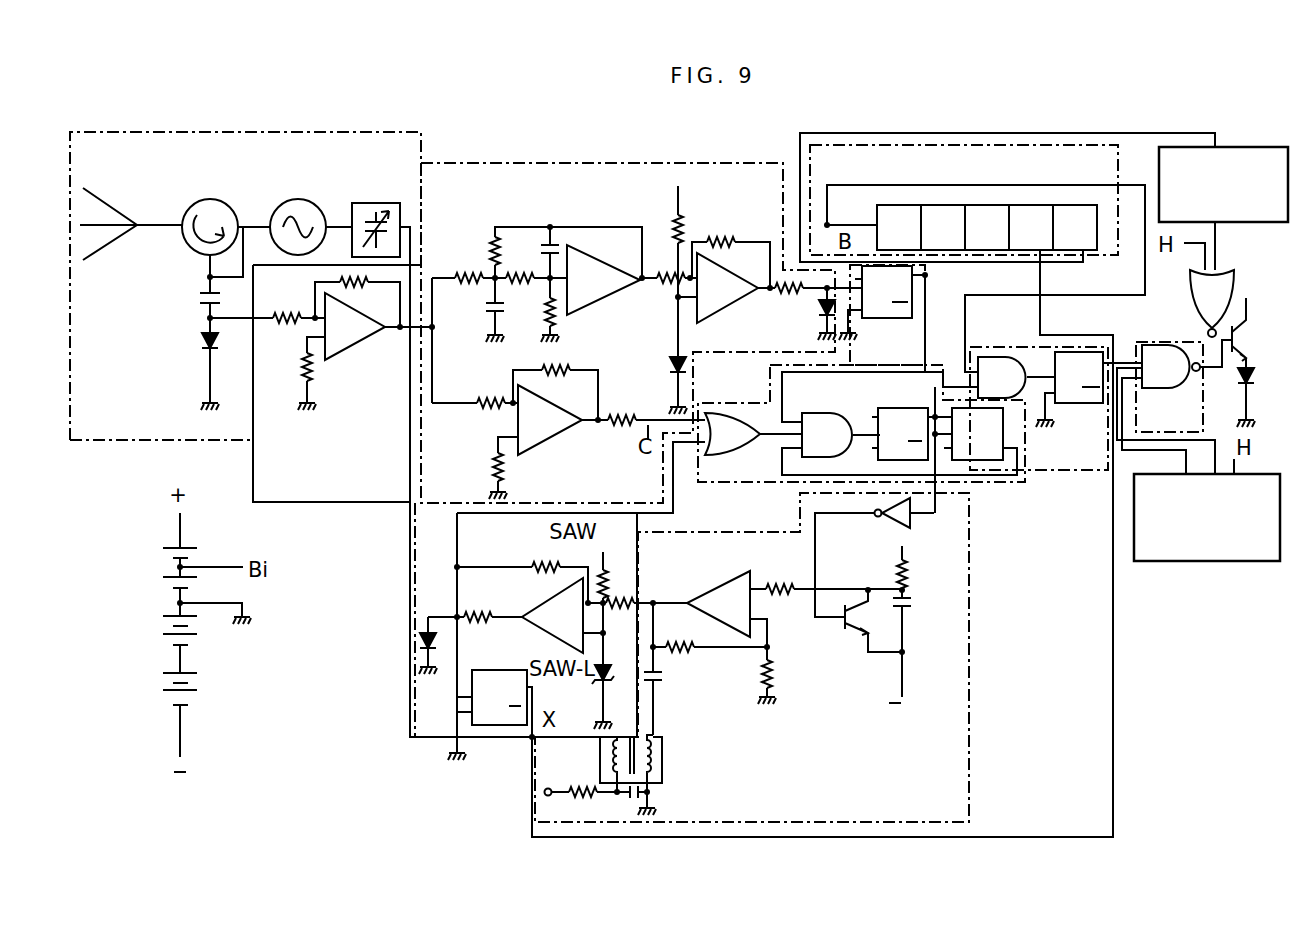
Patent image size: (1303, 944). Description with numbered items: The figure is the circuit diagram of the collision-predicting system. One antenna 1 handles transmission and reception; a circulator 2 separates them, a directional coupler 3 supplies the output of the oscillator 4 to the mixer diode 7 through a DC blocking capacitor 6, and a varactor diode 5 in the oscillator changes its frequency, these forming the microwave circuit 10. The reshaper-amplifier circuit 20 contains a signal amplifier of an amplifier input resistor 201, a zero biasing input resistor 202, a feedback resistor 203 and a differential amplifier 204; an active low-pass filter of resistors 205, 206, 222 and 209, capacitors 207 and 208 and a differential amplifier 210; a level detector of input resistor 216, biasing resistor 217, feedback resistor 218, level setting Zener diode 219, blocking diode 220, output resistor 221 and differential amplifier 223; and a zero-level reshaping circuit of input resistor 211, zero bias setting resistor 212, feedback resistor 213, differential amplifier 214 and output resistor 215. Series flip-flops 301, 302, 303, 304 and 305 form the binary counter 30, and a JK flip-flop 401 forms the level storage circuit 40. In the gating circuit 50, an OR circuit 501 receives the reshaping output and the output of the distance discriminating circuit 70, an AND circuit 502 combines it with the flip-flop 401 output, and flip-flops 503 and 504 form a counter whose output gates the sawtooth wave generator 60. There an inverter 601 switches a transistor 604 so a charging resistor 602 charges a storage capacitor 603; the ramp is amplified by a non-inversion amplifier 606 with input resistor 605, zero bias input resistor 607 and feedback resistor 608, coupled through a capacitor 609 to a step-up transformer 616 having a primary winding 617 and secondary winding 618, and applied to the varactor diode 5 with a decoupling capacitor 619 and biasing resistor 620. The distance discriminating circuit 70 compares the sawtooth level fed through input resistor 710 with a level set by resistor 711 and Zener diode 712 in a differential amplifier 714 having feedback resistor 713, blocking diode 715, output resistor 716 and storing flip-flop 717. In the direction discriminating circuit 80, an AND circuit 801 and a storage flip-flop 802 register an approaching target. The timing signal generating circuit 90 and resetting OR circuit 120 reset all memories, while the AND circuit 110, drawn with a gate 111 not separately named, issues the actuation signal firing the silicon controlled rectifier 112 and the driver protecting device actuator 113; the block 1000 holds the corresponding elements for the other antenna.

The antenna 1 is at (106, 198).
The circulator 2 is at (204, 201).
The directional coupler 3 is at (250, 225).
The oscillator 4 is at (311, 200).
The varactor diode 5 is at (385, 203).
The DC blocking capacitor 6 is at (196, 297).
The mixer diode 7 is at (196, 343).
The microwave circuit 10 is at (263, 132).
The reshaper-amplifier circuit 20 is at (610, 163).
The counter 30 is at (863, 144).
The level storage circuit 40 is at (913, 317).
The gating circuit 50 is at (1017, 498).
The sawtooth wave generator 60 is at (969, 619).
The distance discriminating circuit 70 is at (415, 694).
The direction discriminating circuit 80 is at (1027, 348).
The timing signal generating circuit 90 is at (1262, 224).
The AND circuit 110 is at (1168, 342).
The AND gate 111 is at (1163, 390).
The silicon controlled rectifier 112 is at (1250, 386).
The driver protecting device actuator 113 is at (1248, 322).
The OR circuit 120 is at (1192, 303).
The amplifier input resistor 201 is at (285, 324).
The zero biasing input resistor 202 is at (304, 380).
The feedback resistor 203 is at (340, 280).
The differential amplifier 204 is at (362, 350).
The resistor 205 is at (480, 274).
The resistor 206 is at (494, 244).
The capacitor 207 is at (543, 247).
The capacitor 208 is at (492, 314).
The resistor 209 is at (556, 320).
The differential amplifier 210 is at (610, 288).
The input resistor 211 is at (490, 400).
The zero bias setting resistor 212 is at (495, 465).
The feedback resistor 213 is at (564, 375).
The differential amplifier 214 is at (554, 440).
The output resistor 215 is at (620, 425).
The input resistor 216 is at (662, 288).
The biasing resistor 217 is at (674, 226).
The feedback resistor 218 is at (722, 240).
The level setting Zener diode 219 is at (669, 366).
The diode 220 is at (822, 320).
The output resistor 221 is at (790, 296).
The resistor 222 is at (520, 285).
The differential amplifier 223 is at (727, 314).
The flip-flop 301 is at (894, 205).
The flip-flop 302 is at (943, 205).
The flip-flop 303 is at (993, 205).
The flip-flop 304 is at (1038, 205).
The flip-flop 305 is at (1086, 205).
The JK flip-flop 401 is at (870, 326).
The OR circuit 501 is at (748, 455).
The AND circuit 502 is at (824, 413).
The flip-flop 503 is at (905, 406).
The flip-flop 504 is at (1003, 428).
The inverter 601 is at (885, 516).
The charging resistor 602 is at (907, 572).
The storage capacitor 603 is at (911, 605).
The switching transistor 604 is at (860, 628).
The input resistor 605 is at (781, 587).
The non-inversion amplifier 606 is at (736, 579).
The zero bias input resistor 607 is at (774, 678).
The feedback resistor 608 is at (690, 653).
The coupling capacitor 609 is at (661, 681).
The step-up transformer 616 is at (662, 775).
The transformer primary winding 617 is at (657, 757).
The transformer secondary winding 618 is at (610, 758).
The decoupling capacitor 619 is at (638, 800).
The biasing resistor 620 is at (585, 798).
The input resistor 710 is at (630, 601).
The level setting resistor 711 is at (619, 581).
The Zener diode 712 is at (598, 676).
The feedback resistor 713 is at (540, 563).
The differential amplifier 714 is at (558, 597).
The negative-going output blocking diode 715 is at (420, 640).
The output resistor 716 is at (485, 611).
The flip-flop 717 is at (496, 670).
The AND circuit 801 is at (987, 356).
The storage flip-flop 802 is at (1082, 406).
The circuit elements associated with the other antenna 1000 is at (1228, 561).